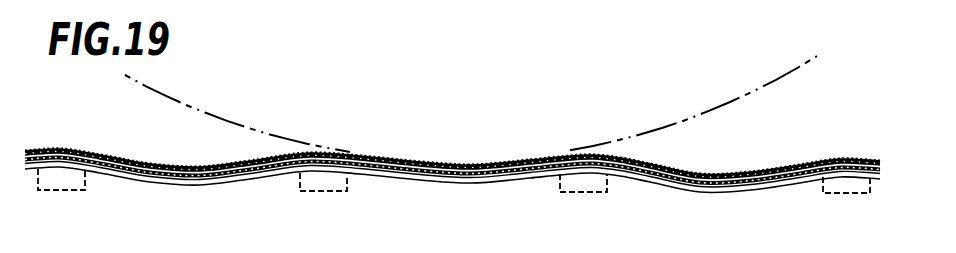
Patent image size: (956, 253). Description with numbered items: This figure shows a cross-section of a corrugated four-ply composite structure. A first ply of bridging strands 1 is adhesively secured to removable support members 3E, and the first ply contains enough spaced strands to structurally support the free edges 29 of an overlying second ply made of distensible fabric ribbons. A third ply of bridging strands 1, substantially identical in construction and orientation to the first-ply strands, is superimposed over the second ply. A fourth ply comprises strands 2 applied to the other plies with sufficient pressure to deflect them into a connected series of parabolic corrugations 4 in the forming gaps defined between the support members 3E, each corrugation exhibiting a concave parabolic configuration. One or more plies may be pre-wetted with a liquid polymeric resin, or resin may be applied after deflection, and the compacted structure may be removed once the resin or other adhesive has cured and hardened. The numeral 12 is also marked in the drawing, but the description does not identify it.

The bridging strands 1 is at (237, 183).
The strands 2 is at (753, 173).
The parabolic corrugations 4 is at (247, 124).
The backing layer 12 is at (485, 184).
The free edges 29 is at (137, 163).
The removable support members 3E is at (609, 192).